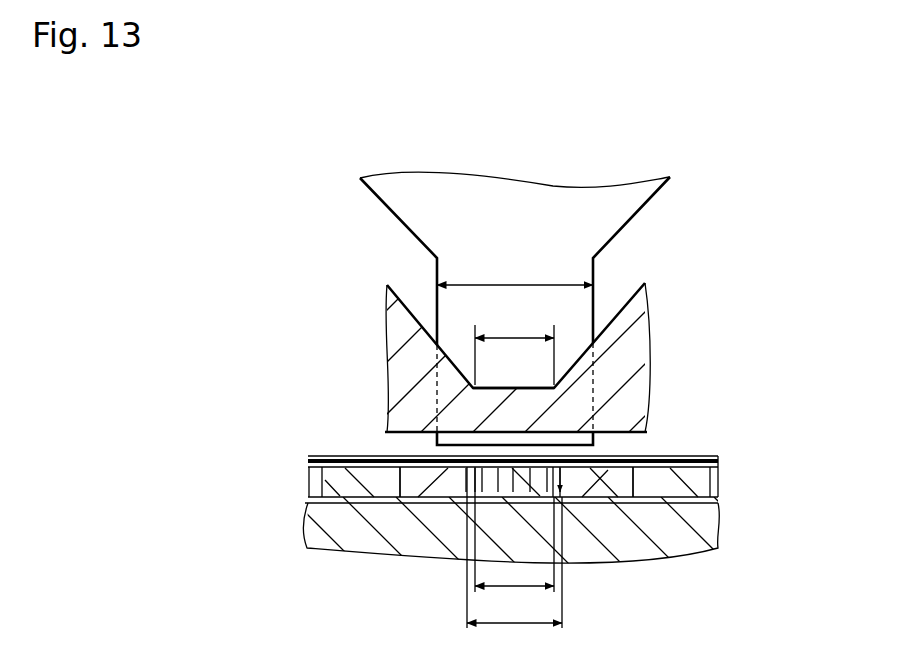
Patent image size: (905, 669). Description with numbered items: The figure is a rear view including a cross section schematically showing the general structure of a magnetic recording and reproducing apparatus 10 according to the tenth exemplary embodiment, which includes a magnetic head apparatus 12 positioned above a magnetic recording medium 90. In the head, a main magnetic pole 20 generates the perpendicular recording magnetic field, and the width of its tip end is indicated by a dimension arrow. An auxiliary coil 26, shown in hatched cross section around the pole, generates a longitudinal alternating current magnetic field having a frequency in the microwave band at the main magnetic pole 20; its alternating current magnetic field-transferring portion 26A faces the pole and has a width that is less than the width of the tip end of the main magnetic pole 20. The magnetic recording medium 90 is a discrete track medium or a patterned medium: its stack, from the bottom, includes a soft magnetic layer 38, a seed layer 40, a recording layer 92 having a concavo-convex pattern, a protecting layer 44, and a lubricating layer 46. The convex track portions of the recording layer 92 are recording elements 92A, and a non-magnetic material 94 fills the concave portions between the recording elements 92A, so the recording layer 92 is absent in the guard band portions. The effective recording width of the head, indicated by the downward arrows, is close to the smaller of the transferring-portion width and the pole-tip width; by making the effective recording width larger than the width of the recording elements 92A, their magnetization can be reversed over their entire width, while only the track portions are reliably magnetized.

The magnetic recording and reproducing apparatus 10 is at (518, 117).
The magnetic head apparatus 12 is at (307, 350).
The main magnetic pole 20 is at (593, 297).
The auxiliary coil 26 is at (384, 343).
The alternating current magnetic field-transferring portion 26A is at (475, 378).
The magnetic recording medium 90 is at (295, 500).
The lubricating layer 46 is at (718, 457).
The protecting layer 44 is at (718, 462).
The recording layer 92 is at (729, 482).
The recording elements 92A is at (504, 466).
The non-magnetic material 94 is at (422, 488).
The seed layer 40 is at (718, 500).
The soft magnetic layer 38 is at (718, 522).